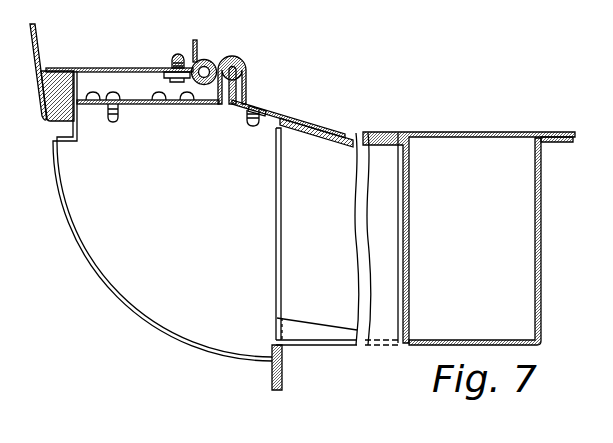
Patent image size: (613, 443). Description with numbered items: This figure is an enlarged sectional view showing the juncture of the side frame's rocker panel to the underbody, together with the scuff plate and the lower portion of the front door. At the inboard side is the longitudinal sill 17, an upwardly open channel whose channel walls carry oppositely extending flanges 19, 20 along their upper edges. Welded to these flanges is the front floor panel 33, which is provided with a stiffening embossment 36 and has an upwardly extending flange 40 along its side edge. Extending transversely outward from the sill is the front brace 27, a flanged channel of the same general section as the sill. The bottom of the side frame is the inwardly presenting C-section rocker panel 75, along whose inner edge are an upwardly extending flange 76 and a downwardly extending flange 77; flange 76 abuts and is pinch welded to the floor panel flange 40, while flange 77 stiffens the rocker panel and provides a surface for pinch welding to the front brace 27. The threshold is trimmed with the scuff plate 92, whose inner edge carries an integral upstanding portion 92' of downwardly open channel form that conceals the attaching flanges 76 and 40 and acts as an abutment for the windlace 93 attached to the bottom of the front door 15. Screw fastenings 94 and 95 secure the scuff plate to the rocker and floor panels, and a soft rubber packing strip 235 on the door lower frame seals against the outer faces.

The front door 15 is at (40, 42).
The packing strip 235 is at (60, 124).
The rocker panel 75 is at (83, 230).
The downwardly extending flange 77 is at (271, 374).
The front brace 27 is at (305, 179).
The scuff plate 92 is at (132, 71).
The windlace 93 is at (200, 64).
The upwardly extending flange 40 is at (241, 62).
The upwardly extending flange 76 is at (231, 58).
The upstanding portion 92' is at (288, 99).
The screw fastening 94 is at (117, 115).
The screw fastening 95 is at (247, 117).
The stiffening embossment 36 is at (302, 126).
The front floor panel 33 is at (373, 132).
The flange 19 is at (393, 133).
The flange 20 is at (545, 143).
The longitudinal sill 17 is at (541, 243).